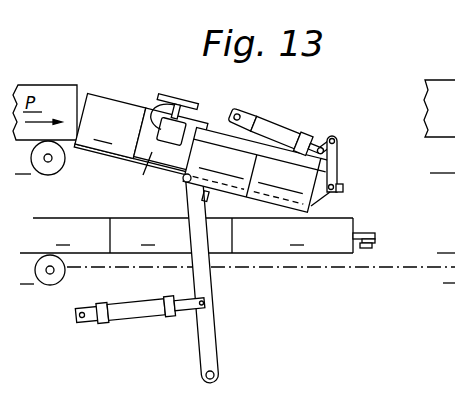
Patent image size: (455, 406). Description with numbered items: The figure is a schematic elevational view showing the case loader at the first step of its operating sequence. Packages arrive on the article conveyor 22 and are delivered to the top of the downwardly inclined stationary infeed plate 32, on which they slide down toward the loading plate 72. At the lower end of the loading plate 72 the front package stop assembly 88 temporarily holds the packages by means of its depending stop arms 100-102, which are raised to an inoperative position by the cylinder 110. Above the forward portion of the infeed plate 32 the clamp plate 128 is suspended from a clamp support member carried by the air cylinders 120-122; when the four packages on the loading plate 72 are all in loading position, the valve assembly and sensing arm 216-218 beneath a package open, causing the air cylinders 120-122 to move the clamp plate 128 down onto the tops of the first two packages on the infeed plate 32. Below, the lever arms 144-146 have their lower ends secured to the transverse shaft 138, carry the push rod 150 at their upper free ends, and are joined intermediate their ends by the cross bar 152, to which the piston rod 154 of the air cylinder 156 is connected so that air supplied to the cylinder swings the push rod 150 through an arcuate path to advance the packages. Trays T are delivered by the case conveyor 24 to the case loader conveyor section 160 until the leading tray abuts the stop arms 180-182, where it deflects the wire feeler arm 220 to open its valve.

The article conveyor 22 is at (30, 175).
The case conveyor 24 is at (44, 292).
The infeed plate 32 is at (94, 157).
The loading plate 72 is at (186, 235).
The front package stop assembly 88 is at (350, 156).
The cylinder 110 is at (276, 119).
The air cylinders 120-122 is at (163, 97).
The clamp plate 128 is at (199, 107).
The shaft 138 is at (216, 376).
The lever arms 144-146 is at (216, 347).
The push rod 150 is at (180, 181).
The cross bar 152 is at (207, 303).
The piston rod 154 is at (183, 318).
The air cylinder 156 is at (130, 318).
The case loader conveyor section 160 is at (278, 272).
The valve assembly and sensing arm 216-218 is at (240, 202).
The stop arms 100-102 is at (313, 206).
The stop arms 180-182 is at (372, 234).
The wire feeler arm 220 is at (366, 248).